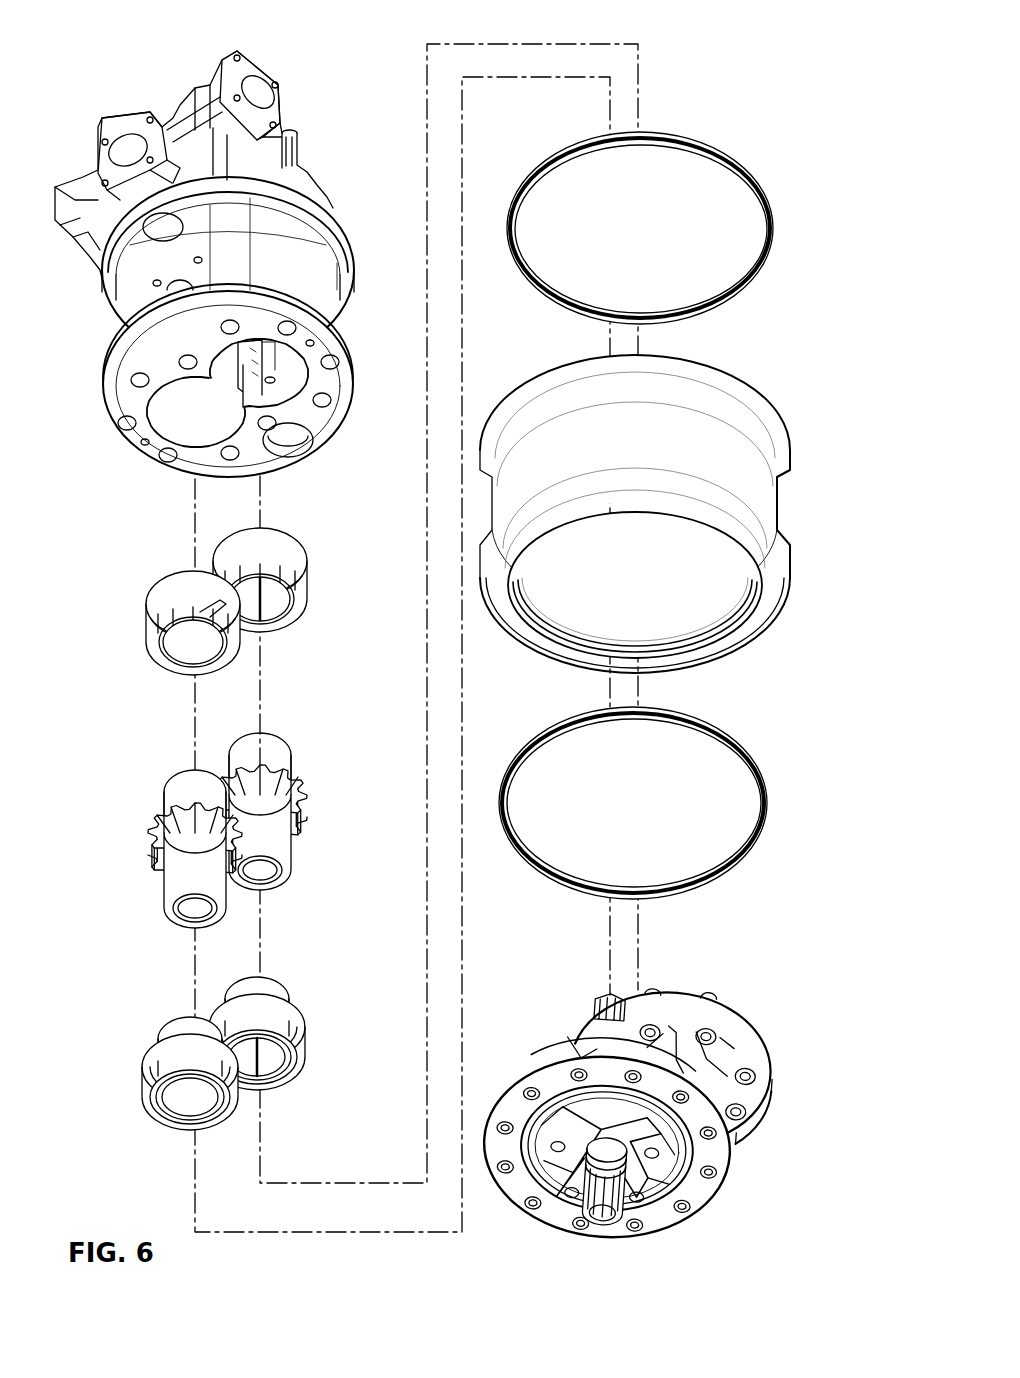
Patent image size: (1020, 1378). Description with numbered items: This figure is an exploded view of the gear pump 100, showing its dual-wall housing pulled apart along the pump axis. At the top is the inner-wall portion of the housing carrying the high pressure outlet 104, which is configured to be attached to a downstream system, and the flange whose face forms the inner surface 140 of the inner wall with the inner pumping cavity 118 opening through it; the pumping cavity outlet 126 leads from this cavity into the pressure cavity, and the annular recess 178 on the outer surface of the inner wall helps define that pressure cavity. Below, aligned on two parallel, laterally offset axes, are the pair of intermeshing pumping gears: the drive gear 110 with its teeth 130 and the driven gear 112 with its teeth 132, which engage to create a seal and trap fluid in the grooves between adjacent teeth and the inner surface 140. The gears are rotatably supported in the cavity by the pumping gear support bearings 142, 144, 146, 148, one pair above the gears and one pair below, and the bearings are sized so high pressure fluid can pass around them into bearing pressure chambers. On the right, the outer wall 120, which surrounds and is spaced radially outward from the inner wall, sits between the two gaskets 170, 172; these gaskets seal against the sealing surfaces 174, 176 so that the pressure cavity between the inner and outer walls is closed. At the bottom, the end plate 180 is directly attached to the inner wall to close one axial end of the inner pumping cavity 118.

The gear pump 100 is at (728, 80).
The high pressure outlet 104 is at (137, 118).
The drive gear 110 is at (156, 849).
The driven gear 112 is at (305, 811).
The inner pumping cavity 118 is at (300, 402).
The outer wall 120 is at (515, 623).
The pumping cavity outlet 126 is at (150, 297).
The teeth of the drive gear 130 is at (175, 793).
The teeth of the driven gear 132 is at (300, 790).
The inner surface of the inner wall 140 is at (160, 440).
The pumping gear support bearing 142 is at (155, 640).
The pumping gear support bearing 144 is at (152, 1028).
The pumping gear support bearing 146 is at (305, 1012).
The pumping gear support bearing 148 is at (297, 598).
The gasket 170 is at (517, 265).
The gasket 172 is at (543, 877).
The sealing surface 174 is at (328, 218).
The sealing surface 176 is at (330, 331).
The annular recess 178 is at (100, 338).
The end plate 180 is at (720, 1177).